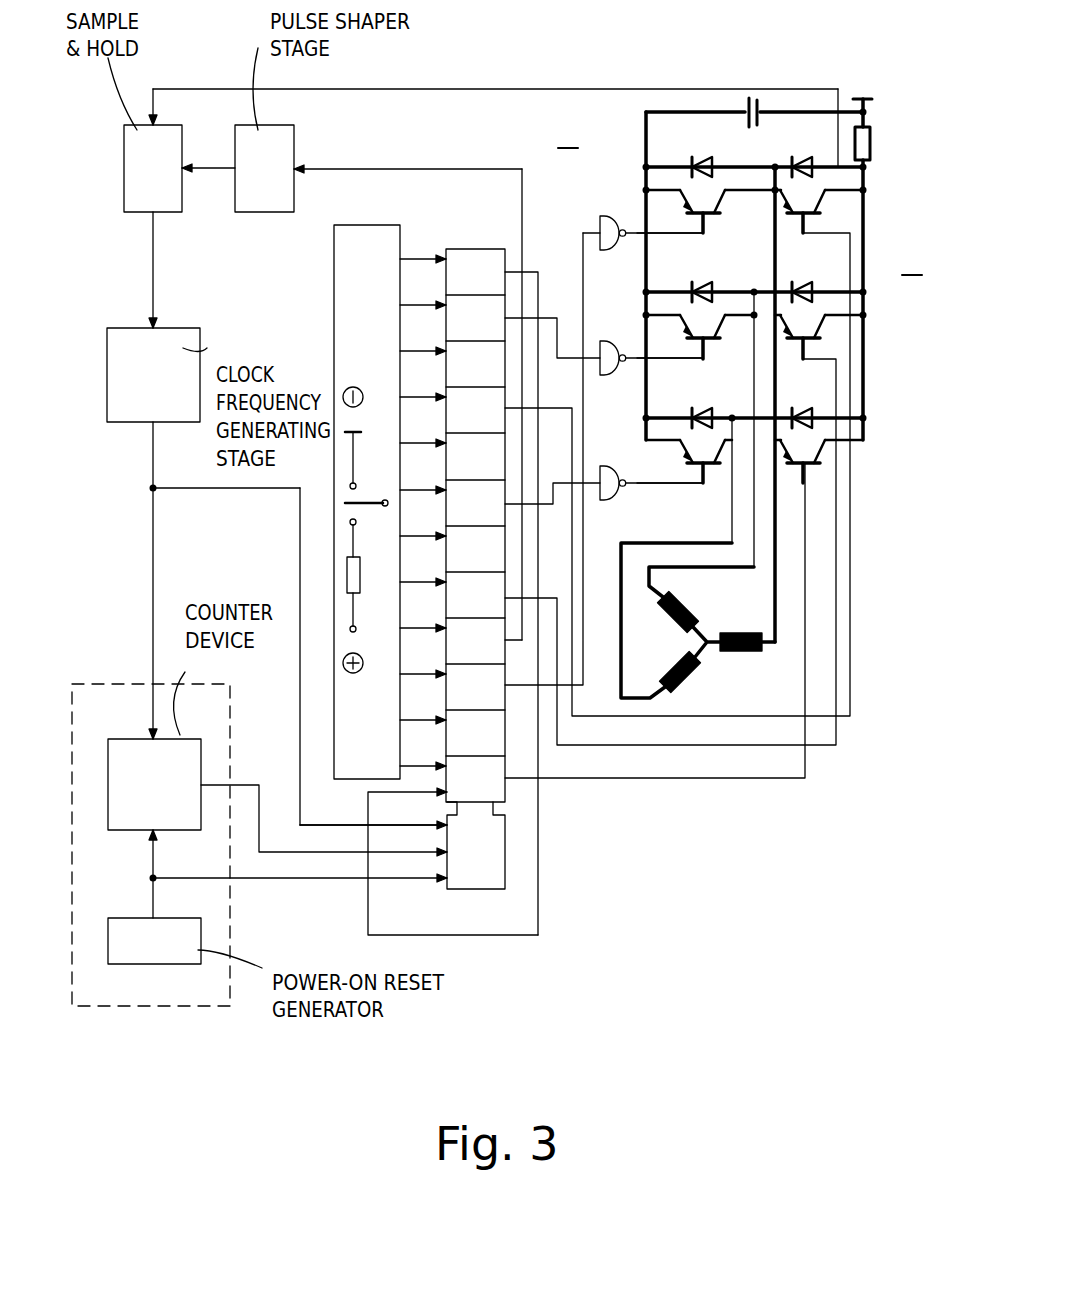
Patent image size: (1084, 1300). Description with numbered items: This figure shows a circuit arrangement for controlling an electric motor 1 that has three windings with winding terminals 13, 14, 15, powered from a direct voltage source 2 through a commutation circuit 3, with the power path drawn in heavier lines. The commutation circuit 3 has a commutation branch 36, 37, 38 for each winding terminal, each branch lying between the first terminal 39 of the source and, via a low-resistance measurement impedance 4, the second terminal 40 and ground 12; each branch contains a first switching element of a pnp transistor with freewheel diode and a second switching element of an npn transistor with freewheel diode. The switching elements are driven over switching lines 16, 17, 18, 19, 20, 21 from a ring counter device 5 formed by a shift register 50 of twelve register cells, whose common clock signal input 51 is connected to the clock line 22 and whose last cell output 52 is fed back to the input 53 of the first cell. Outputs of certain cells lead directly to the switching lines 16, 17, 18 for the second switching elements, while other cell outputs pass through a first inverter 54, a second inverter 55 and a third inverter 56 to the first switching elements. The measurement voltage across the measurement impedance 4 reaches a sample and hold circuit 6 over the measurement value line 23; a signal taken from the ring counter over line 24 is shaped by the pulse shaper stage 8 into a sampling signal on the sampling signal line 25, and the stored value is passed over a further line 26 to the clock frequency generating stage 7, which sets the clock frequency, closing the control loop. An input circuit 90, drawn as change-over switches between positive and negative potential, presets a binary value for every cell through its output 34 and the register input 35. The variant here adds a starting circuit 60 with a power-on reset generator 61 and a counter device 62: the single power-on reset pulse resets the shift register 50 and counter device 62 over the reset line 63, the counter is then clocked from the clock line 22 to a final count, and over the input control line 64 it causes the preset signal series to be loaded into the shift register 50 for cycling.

The electric motor 1 is at (688, 641).
The direct voltage source 2 is at (746, 118).
The commutation circuit 3 is at (783, 297).
The measurement impedance 4 is at (870, 143).
The ring counter device 5 is at (552, 239).
The sample and hold circuit 6 is at (124, 163).
The clock frequency generating stage 7 is at (112, 375).
The pulse shaper stage 8 is at (258, 212).
The ground 12 is at (863, 99).
The winding terminal 13 is at (640, 560).
The winding terminal 14 is at (662, 574).
The winding terminal 15 is at (770, 640).
The switching line 16 is at (580, 778).
The switching line 17 is at (620, 745).
The switching line 18 is at (720, 716).
The switching line 19 is at (637, 483).
The switching line 20 is at (640, 358).
The switching line 21 is at (637, 233).
The clock line 22 is at (240, 492).
The measurement value line 23 is at (495, 96).
The line 24 is at (440, 168).
The sampling signal line 25 is at (218, 175).
The further line 26 is at (150, 260).
The output of the input circuit 34 is at (410, 259).
The input of the shift register 35 is at (446, 255).
The commutation branch 36 is at (735, 415).
The commutation branch 37 is at (752, 290).
The commutation branch 38 is at (775, 167).
The first terminal of the direct voltage source 39 is at (740, 108).
The second terminal of the direct voltage source 40 is at (765, 108).
The shift register 50 is at (470, 889).
The clock signal input 51 is at (425, 827).
The output of the last register cell 52 is at (538, 272).
The input of the first register cell 53 is at (368, 812).
The first inverter 54 is at (609, 500).
The second inverter 55 is at (609, 375).
The third inverter 56 is at (609, 250).
The starting circuit 60 is at (112, 684).
The power-on reset generator 61 is at (128, 920).
The counter device 62 is at (125, 835).
The reset line 63 is at (170, 878).
The input control line 64 is at (258, 790).
The input circuit 90 is at (334, 290).